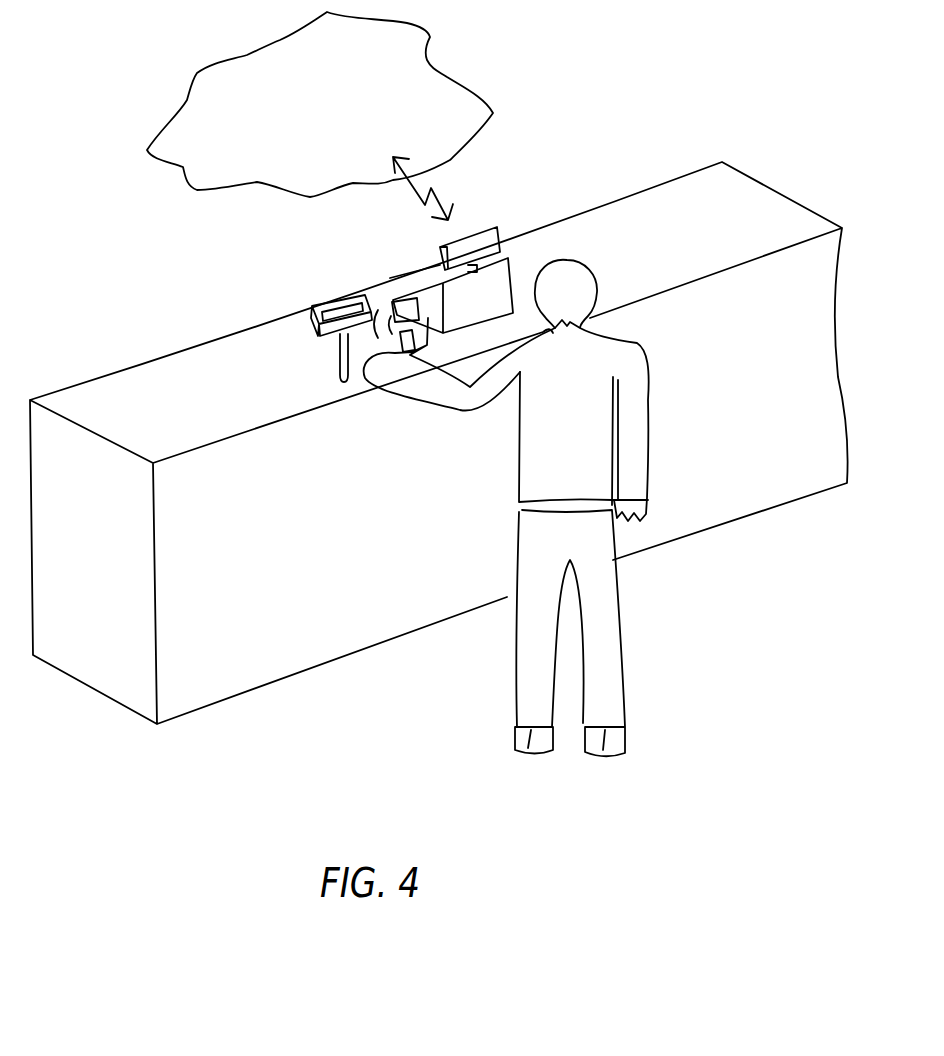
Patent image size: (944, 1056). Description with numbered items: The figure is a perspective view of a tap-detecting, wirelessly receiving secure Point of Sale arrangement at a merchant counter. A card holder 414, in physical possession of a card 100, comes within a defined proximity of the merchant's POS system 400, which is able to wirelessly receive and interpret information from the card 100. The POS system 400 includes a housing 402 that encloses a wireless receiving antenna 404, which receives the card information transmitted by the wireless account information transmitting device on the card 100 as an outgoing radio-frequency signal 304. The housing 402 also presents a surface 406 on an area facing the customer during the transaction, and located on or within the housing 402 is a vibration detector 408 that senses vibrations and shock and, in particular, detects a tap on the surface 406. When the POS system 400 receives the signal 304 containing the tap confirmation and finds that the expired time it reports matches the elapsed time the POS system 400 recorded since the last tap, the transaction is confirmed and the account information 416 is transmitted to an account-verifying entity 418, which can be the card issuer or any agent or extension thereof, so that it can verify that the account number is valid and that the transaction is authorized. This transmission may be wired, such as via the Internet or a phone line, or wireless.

The card 100 is at (420, 320).
The outgoing radio-frequency signal 304 is at (427, 403).
The POS system 400 is at (290, 298).
The housing 402 is at (310, 326).
The wireless receiving antenna 404 is at (352, 362).
The surface 406 is at (347, 317).
The vibration detector 408 is at (310, 370).
The card holder 414 is at (622, 350).
The account information 416 is at (427, 182).
The account-verifying entity 418 is at (420, 42).